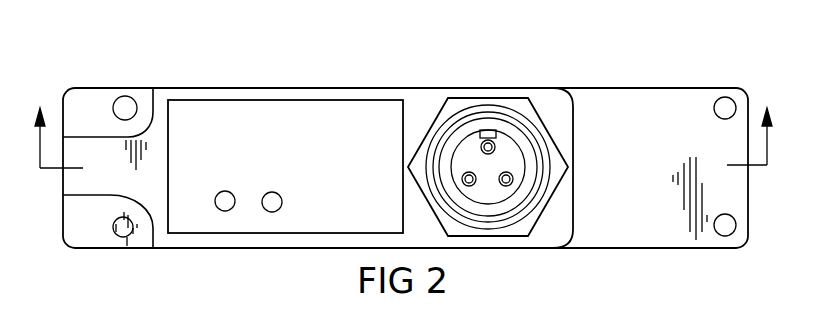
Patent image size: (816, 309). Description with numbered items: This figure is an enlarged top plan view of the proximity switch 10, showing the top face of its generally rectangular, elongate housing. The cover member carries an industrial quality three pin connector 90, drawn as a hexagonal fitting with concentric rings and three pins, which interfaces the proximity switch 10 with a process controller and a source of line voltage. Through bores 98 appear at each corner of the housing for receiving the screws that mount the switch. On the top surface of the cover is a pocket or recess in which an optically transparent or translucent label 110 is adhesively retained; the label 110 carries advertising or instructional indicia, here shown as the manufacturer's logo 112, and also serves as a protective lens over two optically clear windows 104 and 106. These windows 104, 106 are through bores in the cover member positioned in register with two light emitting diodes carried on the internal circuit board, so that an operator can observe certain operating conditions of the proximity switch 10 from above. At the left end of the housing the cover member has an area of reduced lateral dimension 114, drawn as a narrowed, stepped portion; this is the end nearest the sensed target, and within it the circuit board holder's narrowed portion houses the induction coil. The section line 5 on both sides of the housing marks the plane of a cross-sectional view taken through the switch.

The proximity switch 10 is at (320, 82).
The section line 5 is at (404, 126).
The three pin connector 90 is at (520, 104).
The through bores 98 is at (722, 100).
The optically clear window 104 is at (225, 211).
The optically clear window 106 is at (273, 212).
The label 110 is at (213, 115).
The logo 112 is at (362, 118).
The area of reduced lateral dimension 114 is at (62, 202).